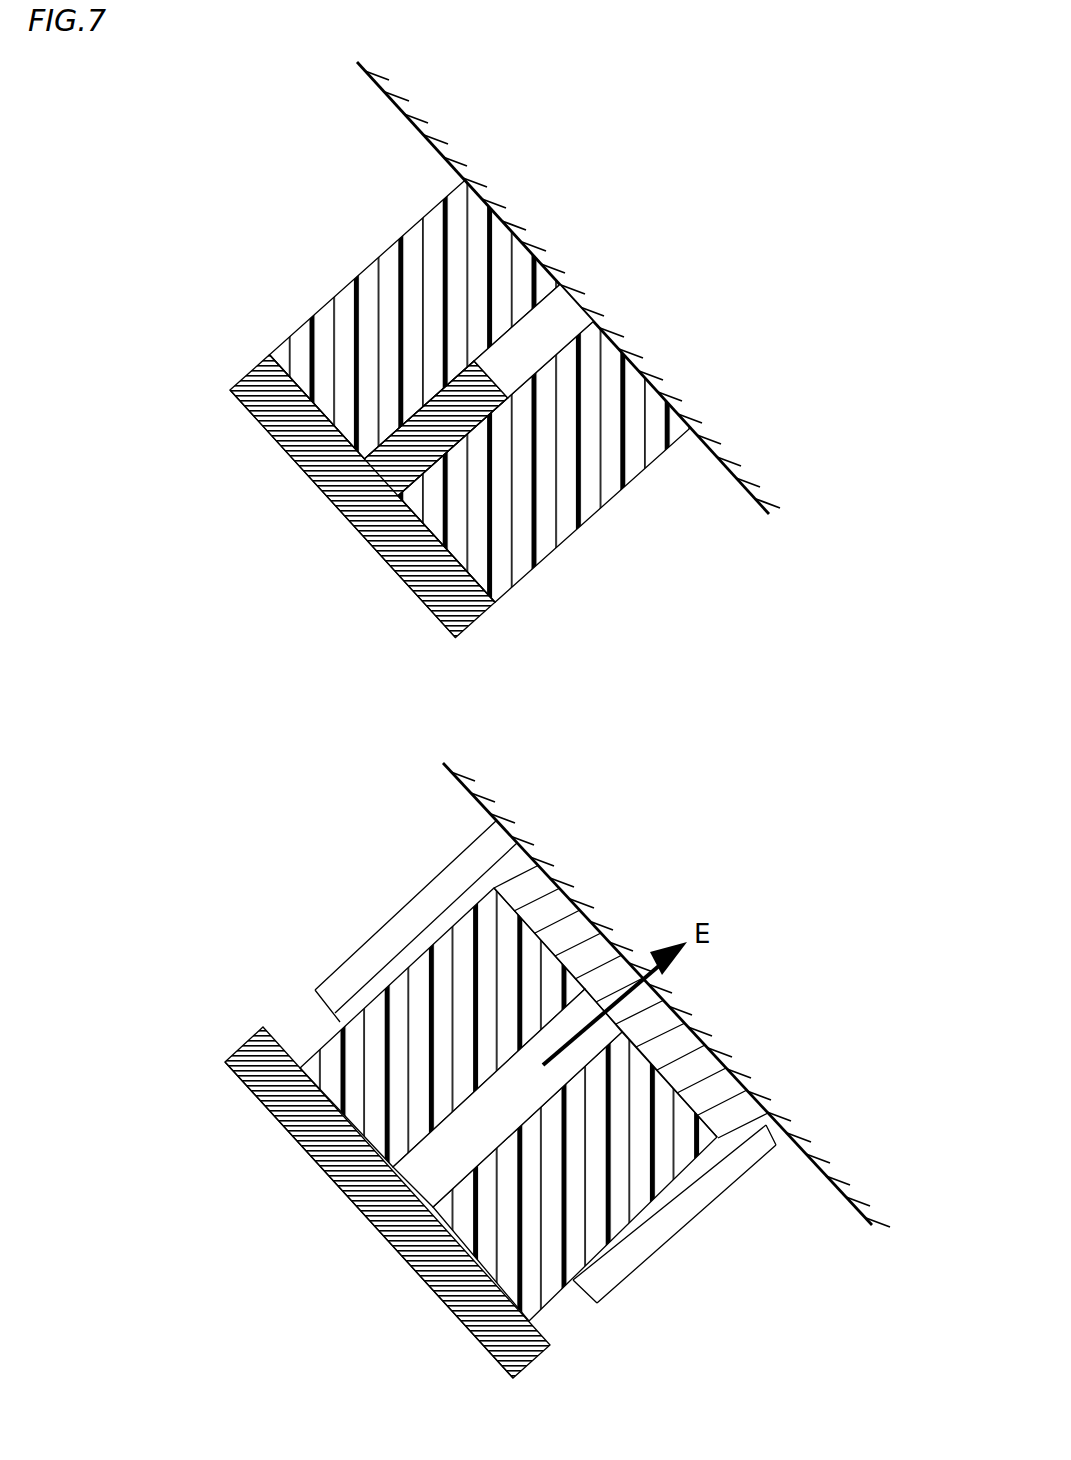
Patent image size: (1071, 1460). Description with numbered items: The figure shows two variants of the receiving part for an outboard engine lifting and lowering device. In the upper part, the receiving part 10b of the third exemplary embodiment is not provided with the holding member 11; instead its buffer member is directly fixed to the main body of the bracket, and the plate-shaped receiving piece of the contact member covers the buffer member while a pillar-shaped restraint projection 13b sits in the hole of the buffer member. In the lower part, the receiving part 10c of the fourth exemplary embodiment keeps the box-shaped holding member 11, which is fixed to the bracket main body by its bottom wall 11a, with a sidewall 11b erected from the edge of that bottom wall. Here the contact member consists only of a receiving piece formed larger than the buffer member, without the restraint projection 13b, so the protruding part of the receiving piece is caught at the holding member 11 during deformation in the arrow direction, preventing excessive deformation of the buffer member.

The receiving part 10b is at (176, 276).
The receiving part 10c is at (180, 946).
The holding member 11 is at (719, 1226).
The bottom wall 11a is at (723, 1097).
The sidewall 11b is at (637, 1248).
The restraint projection 13b is at (430, 478).